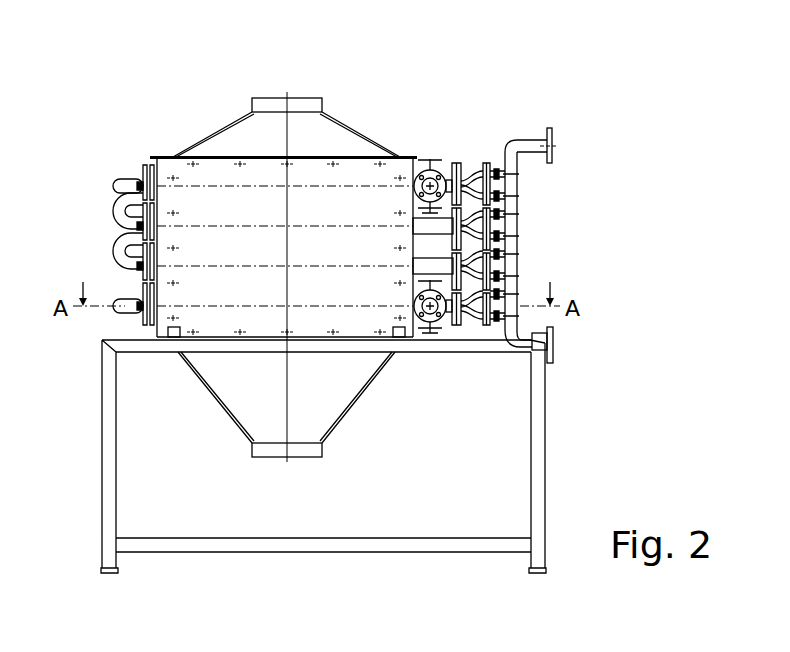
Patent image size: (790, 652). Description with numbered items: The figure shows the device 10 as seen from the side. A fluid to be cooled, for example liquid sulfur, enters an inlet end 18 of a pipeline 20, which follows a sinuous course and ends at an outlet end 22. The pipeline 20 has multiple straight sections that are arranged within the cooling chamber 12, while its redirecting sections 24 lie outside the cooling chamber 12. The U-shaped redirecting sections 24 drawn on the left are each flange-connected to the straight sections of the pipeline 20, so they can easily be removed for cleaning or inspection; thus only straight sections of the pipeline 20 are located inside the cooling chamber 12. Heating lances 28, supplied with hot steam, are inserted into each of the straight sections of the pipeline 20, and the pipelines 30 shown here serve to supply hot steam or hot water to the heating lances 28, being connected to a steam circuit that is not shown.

The device 10 is at (453, 100).
The cooling chamber 12 is at (342, 142).
The inlet end 18 is at (443, 312).
The pipeline 20 is at (126, 166).
The outlet end 22 is at (423, 168).
The redirecting sections 24 is at (118, 213).
The heating lances 28 is at (478, 161).
The pipelines 30 is at (546, 198).